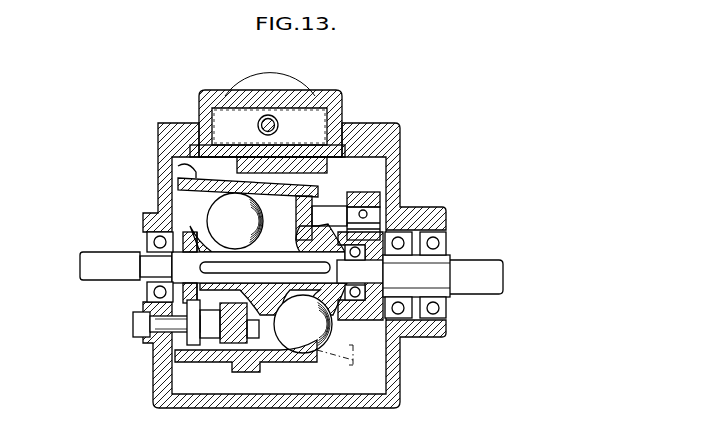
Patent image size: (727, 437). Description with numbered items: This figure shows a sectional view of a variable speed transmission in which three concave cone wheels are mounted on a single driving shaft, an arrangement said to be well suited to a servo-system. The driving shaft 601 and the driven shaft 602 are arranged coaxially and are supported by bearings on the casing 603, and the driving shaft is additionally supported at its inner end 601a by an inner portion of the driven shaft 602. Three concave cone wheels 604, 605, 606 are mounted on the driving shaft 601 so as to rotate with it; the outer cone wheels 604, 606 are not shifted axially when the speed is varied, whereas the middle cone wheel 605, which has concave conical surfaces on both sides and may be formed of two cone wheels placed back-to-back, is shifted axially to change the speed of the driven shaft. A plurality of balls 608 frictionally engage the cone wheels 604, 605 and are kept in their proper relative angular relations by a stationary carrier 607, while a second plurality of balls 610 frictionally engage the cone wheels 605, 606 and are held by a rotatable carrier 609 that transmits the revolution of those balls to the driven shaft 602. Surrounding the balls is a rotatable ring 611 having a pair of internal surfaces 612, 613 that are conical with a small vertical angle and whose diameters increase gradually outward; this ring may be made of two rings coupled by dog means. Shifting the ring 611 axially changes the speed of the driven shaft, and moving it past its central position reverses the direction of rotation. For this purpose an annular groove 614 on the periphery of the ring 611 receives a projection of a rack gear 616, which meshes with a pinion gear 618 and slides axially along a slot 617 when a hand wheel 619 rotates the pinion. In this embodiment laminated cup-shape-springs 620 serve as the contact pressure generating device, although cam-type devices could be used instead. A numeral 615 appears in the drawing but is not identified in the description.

The driving shaft 601 is at (93, 262).
The inner end 601a is at (362, 270).
The driven shaft 602 is at (485, 268).
The casing 603 is at (381, 123).
The concave cone wheel 604 is at (200, 228).
The middle cone wheel 605 is at (283, 233).
The concave cone wheel 606 is at (340, 313).
The stationary carrier 607 is at (213, 328).
The balls 608 is at (241, 219).
The rotatable carrier 609 is at (347, 211).
The balls 610 is at (311, 325).
The rotatable ring 611 is at (195, 170).
The internal surface 612 is at (186, 187).
The internal surface 613 is at (322, 193).
The annular groove 614 is at (242, 358).
The gear 615 is at (198, 251).
The rack gear 616 is at (256, 131).
The slot 617 is at (277, 117).
The pinion gear 618 is at (322, 97).
The hand wheel 619 is at (284, 76).
The laminated cup-shape-springs 620 is at (148, 303).